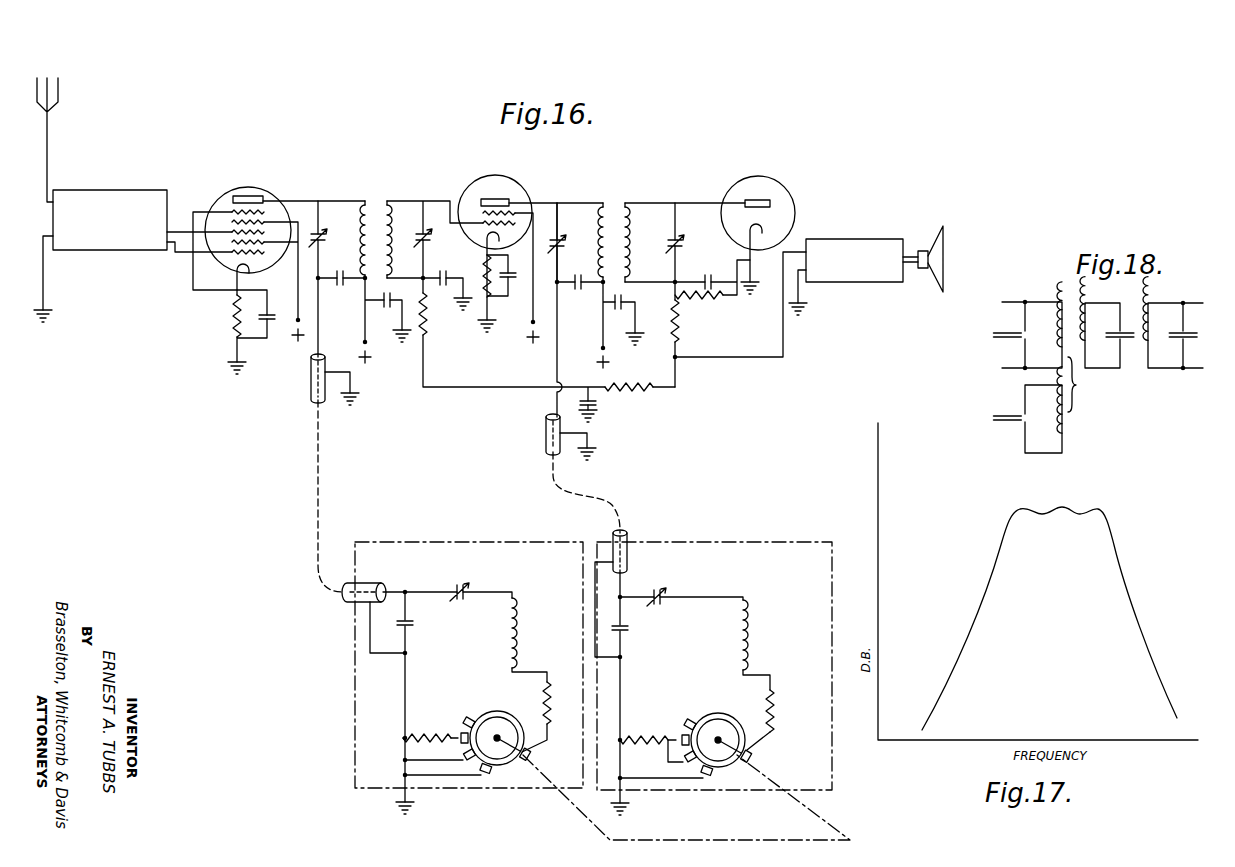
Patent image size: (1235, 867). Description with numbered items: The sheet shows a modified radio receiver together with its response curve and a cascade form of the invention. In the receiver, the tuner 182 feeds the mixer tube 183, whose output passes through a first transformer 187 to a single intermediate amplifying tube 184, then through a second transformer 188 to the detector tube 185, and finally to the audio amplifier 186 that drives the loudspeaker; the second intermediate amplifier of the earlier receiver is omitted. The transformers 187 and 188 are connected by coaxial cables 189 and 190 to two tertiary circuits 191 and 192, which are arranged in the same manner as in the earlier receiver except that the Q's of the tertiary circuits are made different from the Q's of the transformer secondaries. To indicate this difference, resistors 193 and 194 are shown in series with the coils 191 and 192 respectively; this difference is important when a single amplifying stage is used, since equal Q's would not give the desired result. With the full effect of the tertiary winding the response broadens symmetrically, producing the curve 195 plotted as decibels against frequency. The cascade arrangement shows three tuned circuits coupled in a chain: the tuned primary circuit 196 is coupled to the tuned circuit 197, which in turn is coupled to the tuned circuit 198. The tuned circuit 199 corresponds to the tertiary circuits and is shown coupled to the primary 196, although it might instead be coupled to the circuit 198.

In FIG. 16, the tuner 182 is at (112, 190).
In FIG. 16, the mixer tube 183 is at (245, 188).
In FIG. 16, the intermediate amplifying tube 184 is at (486, 178).
In FIG. 16, the detector tube 185 is at (745, 179).
In FIG. 16, the audio amplifier 186 is at (850, 239).
In FIG. 16, the transformer 187 is at (381, 194).
In FIG. 16, the transformer 188 is at (617, 201).
In FIG. 16, the coaxial cable 189 is at (320, 471).
In FIG. 16, the coaxial cable 190 is at (553, 483).
In FIG. 16, the tertiary circuit 191 is at (516, 617).
In FIG. 16, the tertiary circuit 192 is at (752, 614).
In FIG. 16, the resistor 193 is at (545, 700).
In FIG. 16, the resistor 194 is at (773, 695).
In FIG. 17, the curve 195 is at (1115, 547).
In FIG. 18, the tuned primary circuit 196 is at (1050, 305).
In FIG. 18, the tuned circuit 197 is at (1087, 312).
In FIG. 18, the tuned circuit 198 is at (1160, 306).
In FIG. 18, the tuned circuit 199 is at (1068, 450).